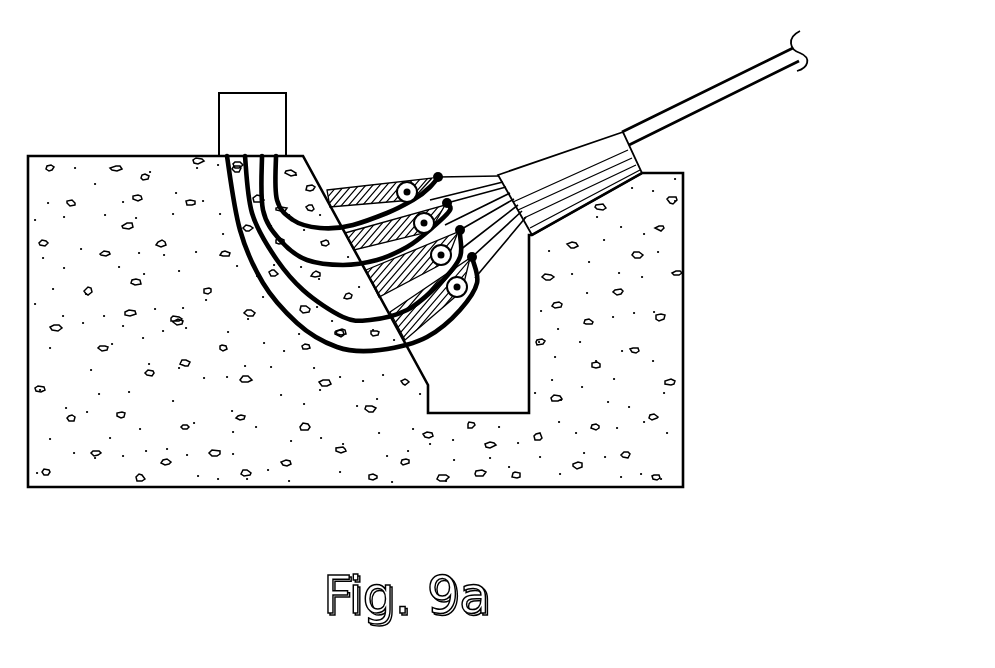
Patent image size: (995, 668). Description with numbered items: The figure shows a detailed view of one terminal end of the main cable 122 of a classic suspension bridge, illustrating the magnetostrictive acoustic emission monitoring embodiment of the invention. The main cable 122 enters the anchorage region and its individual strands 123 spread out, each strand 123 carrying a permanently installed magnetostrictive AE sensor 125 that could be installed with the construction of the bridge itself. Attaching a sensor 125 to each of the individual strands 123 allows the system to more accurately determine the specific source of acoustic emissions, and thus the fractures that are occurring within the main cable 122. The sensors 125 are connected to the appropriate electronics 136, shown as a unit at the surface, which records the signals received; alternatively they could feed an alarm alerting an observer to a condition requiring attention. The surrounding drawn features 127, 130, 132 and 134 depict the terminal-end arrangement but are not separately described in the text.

The main cable 122 is at (699, 77).
The individual strands 123 is at (470, 166).
The magnetostrictive AE sensors 125 is at (437, 176).
The cable jackets 127 is at (358, 180).
The connector 130 is at (577, 137).
The ground 132 is at (645, 392).
The cable loops 134 is at (308, 325).
The electronics 136 is at (228, 124).